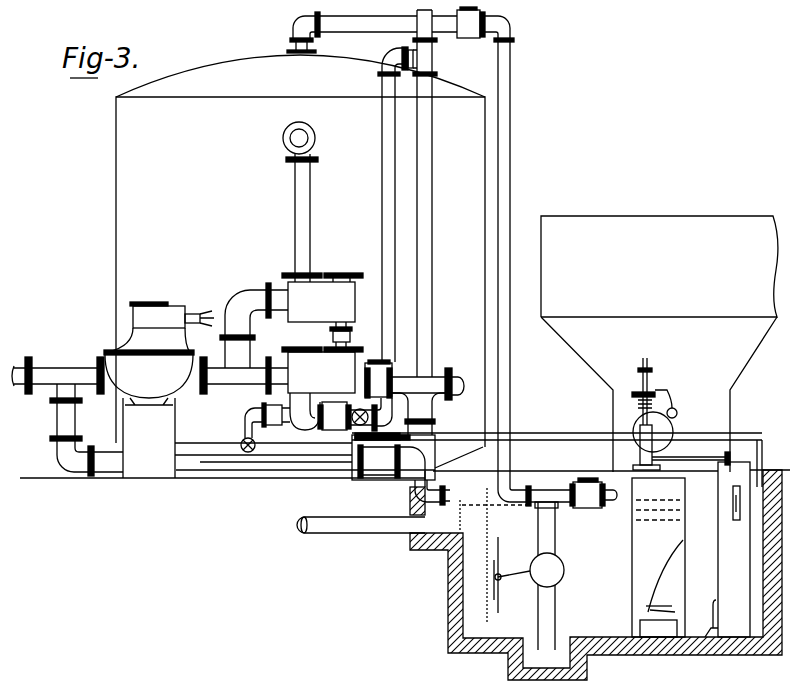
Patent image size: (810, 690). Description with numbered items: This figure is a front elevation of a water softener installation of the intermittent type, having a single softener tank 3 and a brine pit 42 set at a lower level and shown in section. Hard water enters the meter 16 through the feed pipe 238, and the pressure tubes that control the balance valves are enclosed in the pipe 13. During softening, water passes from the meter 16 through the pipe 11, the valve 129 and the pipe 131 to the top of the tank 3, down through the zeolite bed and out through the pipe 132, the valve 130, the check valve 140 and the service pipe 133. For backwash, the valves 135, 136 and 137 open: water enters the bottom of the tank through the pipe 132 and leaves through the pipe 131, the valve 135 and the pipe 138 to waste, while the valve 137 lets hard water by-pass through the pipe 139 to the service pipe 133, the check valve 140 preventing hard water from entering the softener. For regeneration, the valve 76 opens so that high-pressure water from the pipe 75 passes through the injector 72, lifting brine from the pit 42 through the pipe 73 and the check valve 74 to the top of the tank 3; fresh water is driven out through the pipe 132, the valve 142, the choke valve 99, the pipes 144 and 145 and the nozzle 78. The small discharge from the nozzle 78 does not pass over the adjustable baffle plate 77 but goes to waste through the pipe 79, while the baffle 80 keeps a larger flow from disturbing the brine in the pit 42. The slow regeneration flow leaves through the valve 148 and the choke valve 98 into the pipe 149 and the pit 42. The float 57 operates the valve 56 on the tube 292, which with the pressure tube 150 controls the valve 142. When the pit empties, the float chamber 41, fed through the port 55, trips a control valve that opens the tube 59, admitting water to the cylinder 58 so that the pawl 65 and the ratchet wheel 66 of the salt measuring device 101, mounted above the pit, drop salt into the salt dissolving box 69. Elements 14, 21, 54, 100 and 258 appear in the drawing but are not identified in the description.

The softener tank 3 is at (128, 177).
The pipe 11 is at (252, 306).
The pipe 13 is at (207, 316).
The cylinder 14 is at (132, 318).
The meter 16 is at (128, 348).
The cap 21 is at (158, 304).
The float chamber 41 is at (724, 533).
The brine pit 42 is at (448, 590).
The stop 54 is at (714, 612).
The port 55 is at (730, 506).
The valve 56 is at (501, 580).
The float 57 is at (556, 572).
The cylinder 58 is at (640, 453).
The tube 59 is at (728, 442).
The pawl 65 is at (672, 398).
The ratchet wheel 66 is at (672, 426).
The salt dissolving box 69 is at (642, 542).
The injector 72 is at (546, 488).
The pipe 73 is at (512, 108).
The check valve 74 is at (470, 28).
The pipe 75 is at (614, 502).
The valve 76 is at (588, 478).
The baffle plate 77 is at (458, 518).
The nozzle 78 is at (428, 486).
The waste pipe 79 is at (380, 528).
The baffle 80 is at (489, 524).
The choke valve 98 is at (243, 442).
The choke valve 99 is at (372, 404).
The float 100 is at (680, 576).
The salt measuring device 101 is at (604, 228).
The valve 129 is at (294, 280).
The valve 130 is at (346, 370).
The pipe 131 is at (308, 208).
The pipe 132 is at (300, 432).
The service pipe 133 is at (462, 378).
The valve 135 is at (352, 262).
The valve 136 is at (298, 360).
The valve 137 is at (372, 470).
The pipe 138 is at (352, 333).
The pipe 139 is at (202, 474).
The check valve 140 is at (385, 368).
The valve 142 is at (338, 432).
The pipe 144 is at (381, 131).
The pipe 145 is at (428, 131).
The valve 148 is at (262, 412).
The pipe 149 is at (330, 478).
The pressure tube 150 is at (499, 548).
The feed pipe 238 is at (20, 366).
The pipe 258 is at (556, 616).
The tube 292 is at (496, 608).